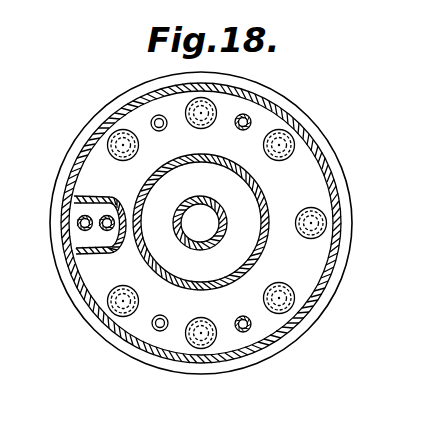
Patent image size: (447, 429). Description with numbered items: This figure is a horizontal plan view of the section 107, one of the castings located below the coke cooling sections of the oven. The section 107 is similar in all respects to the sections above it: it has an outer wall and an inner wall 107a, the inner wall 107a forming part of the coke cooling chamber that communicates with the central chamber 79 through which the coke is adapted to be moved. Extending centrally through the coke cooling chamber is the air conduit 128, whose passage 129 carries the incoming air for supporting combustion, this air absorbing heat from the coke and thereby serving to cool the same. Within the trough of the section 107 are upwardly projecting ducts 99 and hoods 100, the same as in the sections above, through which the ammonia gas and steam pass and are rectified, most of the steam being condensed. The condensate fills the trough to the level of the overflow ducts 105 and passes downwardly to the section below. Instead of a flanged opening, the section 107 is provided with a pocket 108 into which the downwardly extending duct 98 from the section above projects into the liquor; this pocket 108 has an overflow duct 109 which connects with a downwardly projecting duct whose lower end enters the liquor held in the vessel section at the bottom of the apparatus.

The central chamber 79 is at (201, 222).
The downwardly projecting duct 98 is at (118, 242).
The upwardly projecting duct 99 is at (190, 124).
The hood 100 is at (203, 129).
The overflow duct 105 is at (167, 112).
The section 107 is at (342, 187).
The inner wall 107a is at (264, 247).
The pocket 108 is at (93, 201).
The overflow duct 109 is at (86, 231).
The air conduit 128 is at (200, 250).
The passage 129 is at (176, 226).